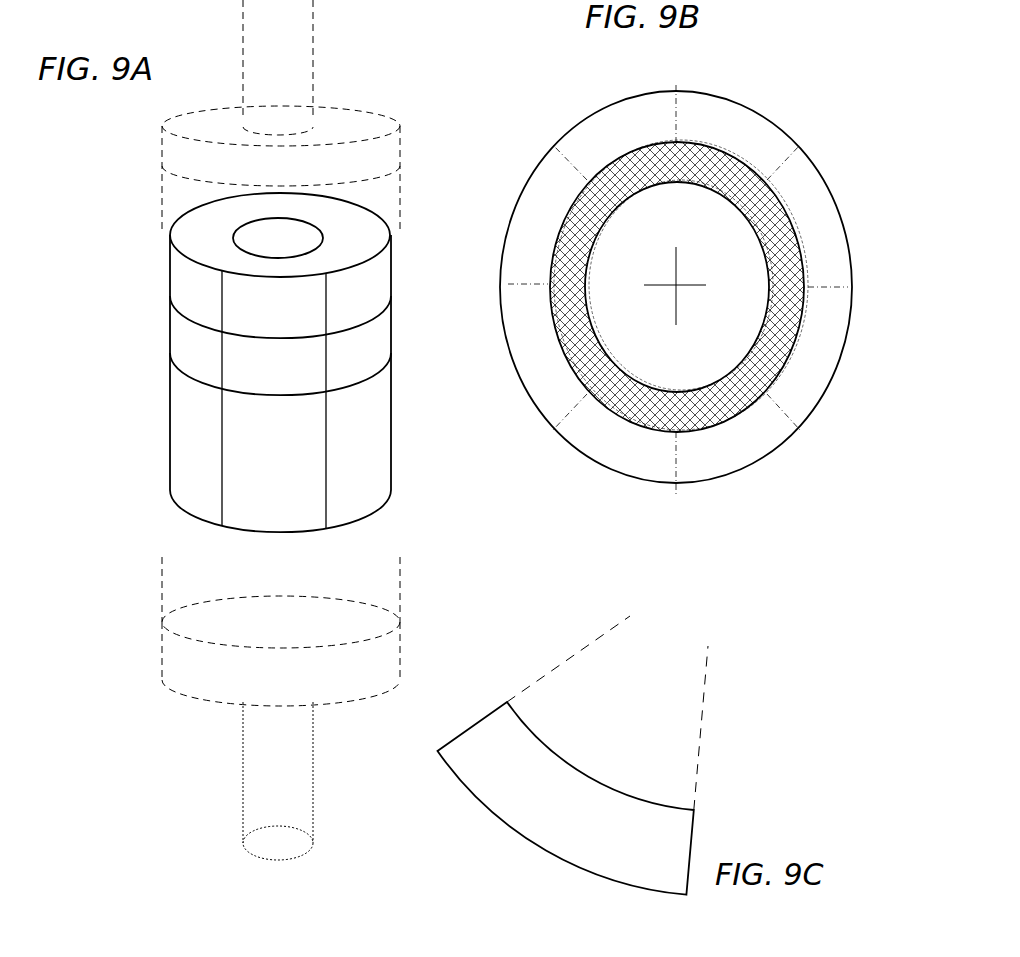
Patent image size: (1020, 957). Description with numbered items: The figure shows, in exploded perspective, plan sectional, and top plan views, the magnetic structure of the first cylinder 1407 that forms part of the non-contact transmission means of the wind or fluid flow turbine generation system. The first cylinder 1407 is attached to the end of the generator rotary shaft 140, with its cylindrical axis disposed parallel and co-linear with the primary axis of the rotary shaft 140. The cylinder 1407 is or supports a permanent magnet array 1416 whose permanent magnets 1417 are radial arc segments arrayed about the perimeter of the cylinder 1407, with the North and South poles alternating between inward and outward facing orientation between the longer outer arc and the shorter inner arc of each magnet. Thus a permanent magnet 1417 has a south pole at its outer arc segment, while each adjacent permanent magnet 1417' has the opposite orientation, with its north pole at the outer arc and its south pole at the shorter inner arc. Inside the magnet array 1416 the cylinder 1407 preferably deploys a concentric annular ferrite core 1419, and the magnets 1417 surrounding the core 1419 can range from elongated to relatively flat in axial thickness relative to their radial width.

In FIG. 9A, the rotary shaft 140 is at (243, 742).
In FIG. 9A, the first cylinder 1407 is at (228, 406).
In FIG. 9B, the first cylinder 1407 is at (572, 100).
In FIG. 9A, the permanent magnet array 1416 is at (152, 420).
In FIG. 9B, the permanent magnet 1417 is at (630, 528).
In FIG. 9C, the permanent magnet 1417 is at (573, 755).
In FIG. 9B, the adjacent permanent magnet 1417' is at (768, 523).
In FIG. 9B, the concentric annular ferrite core 1419 is at (687, 157).